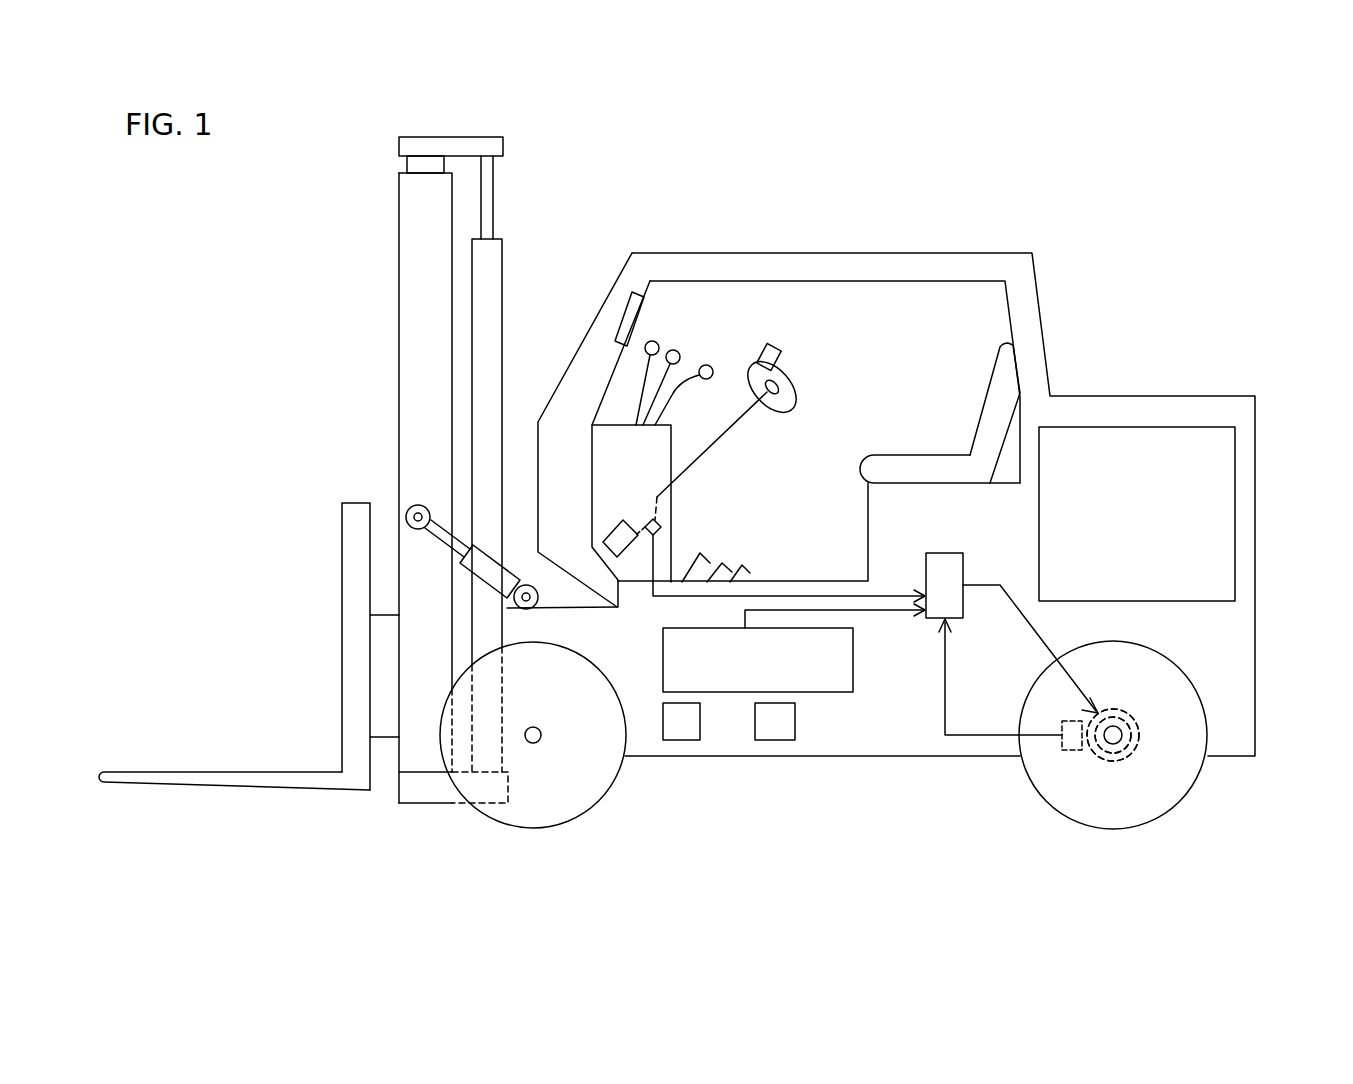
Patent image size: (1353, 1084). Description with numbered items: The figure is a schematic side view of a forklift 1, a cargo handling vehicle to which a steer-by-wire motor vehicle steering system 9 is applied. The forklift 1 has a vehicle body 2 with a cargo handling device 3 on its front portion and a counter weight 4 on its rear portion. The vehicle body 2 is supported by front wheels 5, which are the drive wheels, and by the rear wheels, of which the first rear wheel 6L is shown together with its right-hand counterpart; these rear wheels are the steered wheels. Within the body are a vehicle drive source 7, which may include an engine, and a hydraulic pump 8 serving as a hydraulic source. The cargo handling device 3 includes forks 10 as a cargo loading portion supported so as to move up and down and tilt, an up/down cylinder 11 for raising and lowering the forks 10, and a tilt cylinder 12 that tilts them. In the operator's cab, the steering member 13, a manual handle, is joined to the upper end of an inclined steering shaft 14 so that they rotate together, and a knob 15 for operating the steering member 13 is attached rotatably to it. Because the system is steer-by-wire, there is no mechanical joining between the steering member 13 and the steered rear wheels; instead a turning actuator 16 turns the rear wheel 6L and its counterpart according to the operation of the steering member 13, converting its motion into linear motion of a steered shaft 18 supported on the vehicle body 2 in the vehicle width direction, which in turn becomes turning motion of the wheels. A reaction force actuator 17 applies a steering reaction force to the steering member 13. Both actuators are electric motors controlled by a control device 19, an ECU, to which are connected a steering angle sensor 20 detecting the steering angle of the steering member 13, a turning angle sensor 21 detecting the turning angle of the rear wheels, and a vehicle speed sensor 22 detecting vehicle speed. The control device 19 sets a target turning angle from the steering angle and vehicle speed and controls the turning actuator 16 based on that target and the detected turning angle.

The forklift 1 is at (1062, 302).
The vehicle body 2 is at (917, 745).
The cargo handling device 3 is at (397, 336).
The counter weight 4 is at (1218, 465).
The front wheels 5 is at (573, 802).
The first rear wheel 6L is at (1153, 805).
The vehicle drive source 7 is at (775, 733).
The hydraulic pump 8 is at (680, 730).
The motor vehicle steering system 9 is at (790, 369).
The forks 10 is at (190, 772).
The up/down cylinder 11 is at (470, 448).
The tilt cylinder 12 is at (513, 566).
The steering member 13 is at (790, 405).
The steering shaft 14 is at (748, 414).
The knob 15 is at (772, 347).
The turning actuator 16 is at (1137, 718).
The reaction force actuator 17 is at (620, 530).
The steered shaft 18 is at (1100, 756).
The control device 19 is at (930, 553).
The steering angle sensor 20 is at (648, 512).
The turning angle sensor 21 is at (1070, 751).
The vehicle speed sensor 22 is at (663, 646).